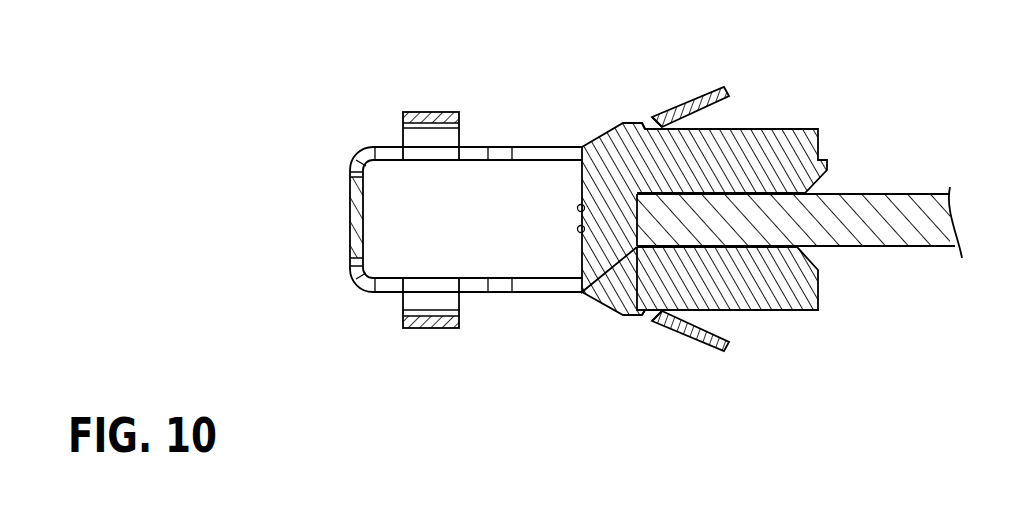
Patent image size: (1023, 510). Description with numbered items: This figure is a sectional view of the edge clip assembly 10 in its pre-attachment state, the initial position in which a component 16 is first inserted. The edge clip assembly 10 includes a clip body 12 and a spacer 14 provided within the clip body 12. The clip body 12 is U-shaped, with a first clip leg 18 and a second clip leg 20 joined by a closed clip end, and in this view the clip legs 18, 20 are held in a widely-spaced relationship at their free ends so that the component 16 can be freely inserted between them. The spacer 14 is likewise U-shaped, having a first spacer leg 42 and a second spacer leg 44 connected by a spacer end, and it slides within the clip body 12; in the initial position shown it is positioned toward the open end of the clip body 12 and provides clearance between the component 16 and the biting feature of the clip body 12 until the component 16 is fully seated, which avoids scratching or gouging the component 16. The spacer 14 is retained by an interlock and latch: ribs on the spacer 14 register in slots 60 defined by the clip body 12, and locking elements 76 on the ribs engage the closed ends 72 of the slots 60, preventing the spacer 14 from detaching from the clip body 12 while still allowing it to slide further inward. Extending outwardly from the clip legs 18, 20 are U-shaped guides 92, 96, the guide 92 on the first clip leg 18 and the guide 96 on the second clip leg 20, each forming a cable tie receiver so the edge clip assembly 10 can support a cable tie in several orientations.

The edge clip assembly 10 is at (366, 299).
The clip body 12 is at (346, 154).
The spacer 14 is at (830, 132).
The component 16 is at (928, 190).
The first clip leg 18 is at (707, 89).
The second clip leg 20 is at (707, 353).
The first spacer leg 42 is at (828, 170).
The second spacer leg 44 is at (820, 289).
The slot 60 is at (568, 153).
The closed end 72 is at (658, 122).
The locking element 76 is at (650, 120).
The guide 92 is at (428, 110).
The guide 96 is at (423, 322).